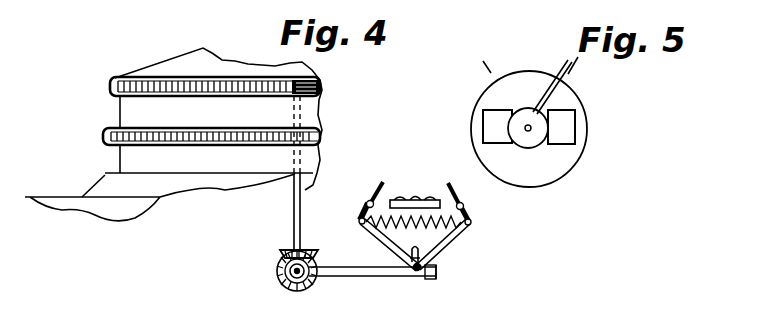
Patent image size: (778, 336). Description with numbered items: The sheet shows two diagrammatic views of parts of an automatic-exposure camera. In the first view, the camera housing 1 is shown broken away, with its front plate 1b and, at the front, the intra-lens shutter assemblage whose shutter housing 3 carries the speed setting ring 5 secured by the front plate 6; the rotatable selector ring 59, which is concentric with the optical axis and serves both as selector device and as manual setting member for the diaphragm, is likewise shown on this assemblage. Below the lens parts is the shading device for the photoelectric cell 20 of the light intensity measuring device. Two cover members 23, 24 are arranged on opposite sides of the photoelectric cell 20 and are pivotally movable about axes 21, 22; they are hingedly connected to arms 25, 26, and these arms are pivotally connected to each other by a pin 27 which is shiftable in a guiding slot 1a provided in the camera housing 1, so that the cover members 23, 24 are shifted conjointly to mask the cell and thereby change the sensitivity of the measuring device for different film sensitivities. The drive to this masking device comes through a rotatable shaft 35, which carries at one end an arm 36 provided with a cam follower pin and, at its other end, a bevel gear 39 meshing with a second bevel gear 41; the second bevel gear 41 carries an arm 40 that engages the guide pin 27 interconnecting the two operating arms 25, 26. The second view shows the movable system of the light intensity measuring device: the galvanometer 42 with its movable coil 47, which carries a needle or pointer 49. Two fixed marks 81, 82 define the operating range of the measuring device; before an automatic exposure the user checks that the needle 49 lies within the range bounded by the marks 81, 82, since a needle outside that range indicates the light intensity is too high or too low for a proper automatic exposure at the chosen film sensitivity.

In FIG. 4, the camera housing 1 is at (87, 207).
In FIG. 4, the guiding slot 1a is at (444, 257).
In FIG. 4, the front plate 1b is at (108, 180).
In FIG. 4, the shutter housing 3 is at (126, 106).
In FIG. 4, the speed setting ring 5 is at (112, 86).
In FIG. 4, the front plate 6 is at (178, 64).
In FIG. 4, the photoelectric cell 20 is at (412, 198).
In FIG. 4, the pivot axis 21 is at (471, 222).
In FIG. 4, the pivot axis 22 is at (366, 203).
In FIG. 4, the cover member 23 is at (462, 191).
In FIG. 4, the cover member 24 is at (378, 184).
In FIG. 4, the arm 25 is at (452, 238).
In FIG. 4, the arm 26 is at (388, 243).
In FIG. 4, the pin 27 is at (425, 268).
In FIG. 4, the rotatable shaft 35 is at (293, 200).
In FIG. 4, the arm 36 is at (318, 86).
In FIG. 4, the bevel gear 39 is at (280, 255).
In FIG. 4, the arm 40 is at (343, 279).
In FIG. 4, the second bevel gear 41 is at (284, 290).
In FIG. 5, the galvanometer 42 is at (557, 167).
In FIG. 5, the movable coil 47 is at (540, 126).
In FIG. 5, the needle 49 is at (552, 68).
In FIG. 4, the selector ring 59 is at (110, 137).
In FIG. 5, the fixed mark 81 is at (572, 62).
In FIG. 5, the fixed mark 82 is at (486, 67).